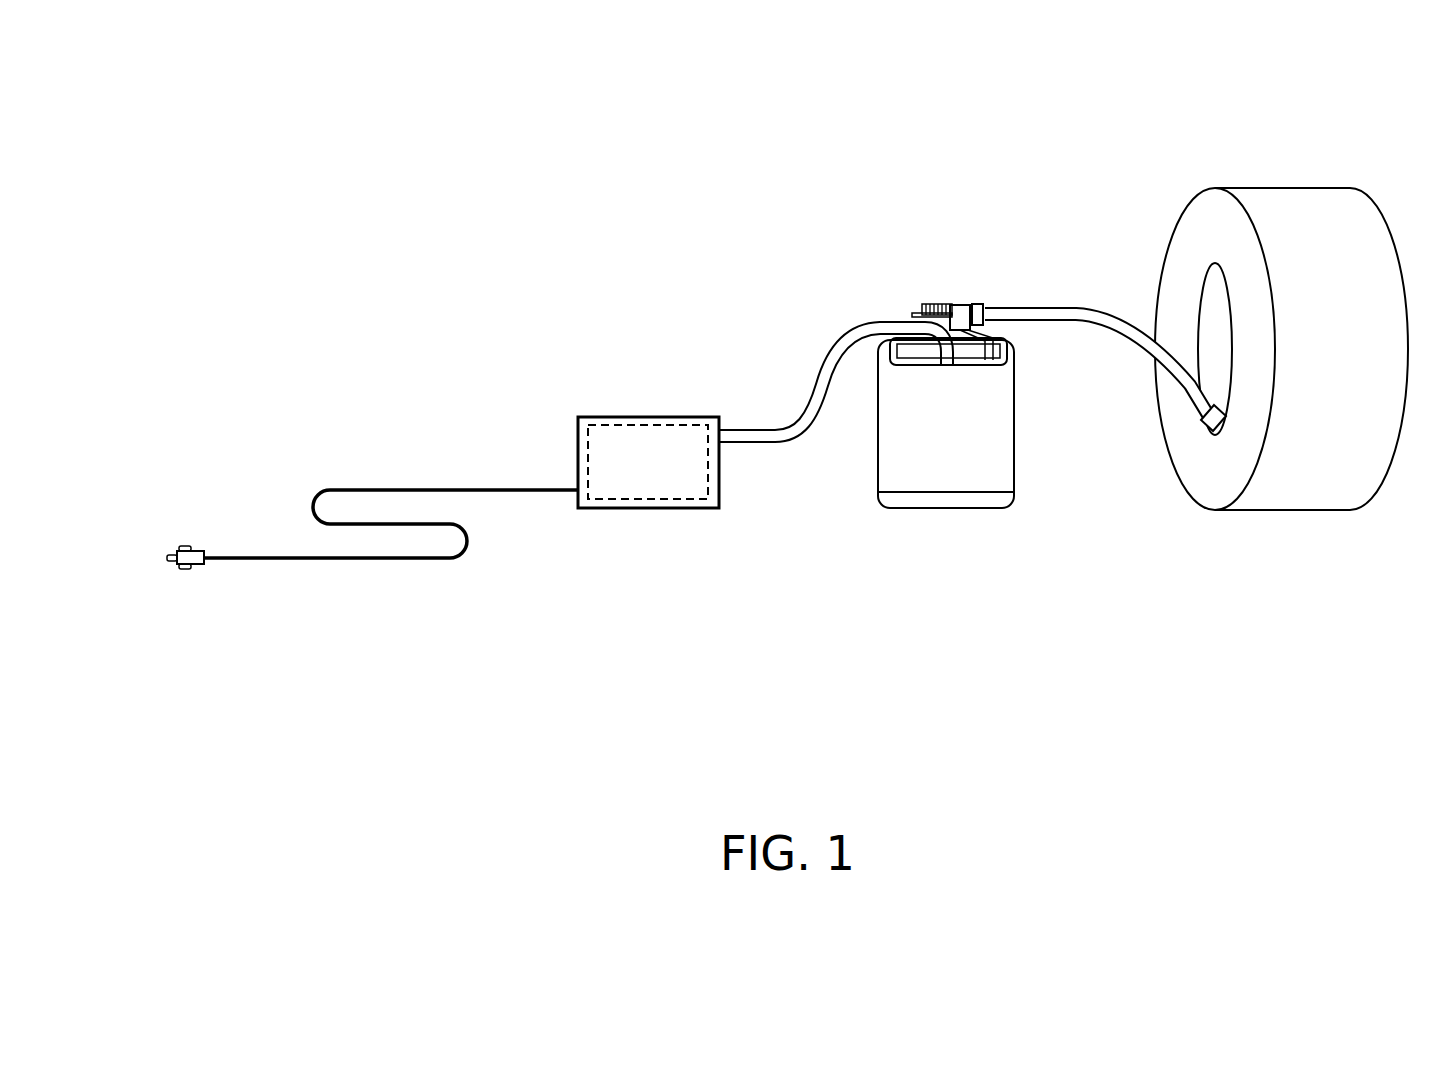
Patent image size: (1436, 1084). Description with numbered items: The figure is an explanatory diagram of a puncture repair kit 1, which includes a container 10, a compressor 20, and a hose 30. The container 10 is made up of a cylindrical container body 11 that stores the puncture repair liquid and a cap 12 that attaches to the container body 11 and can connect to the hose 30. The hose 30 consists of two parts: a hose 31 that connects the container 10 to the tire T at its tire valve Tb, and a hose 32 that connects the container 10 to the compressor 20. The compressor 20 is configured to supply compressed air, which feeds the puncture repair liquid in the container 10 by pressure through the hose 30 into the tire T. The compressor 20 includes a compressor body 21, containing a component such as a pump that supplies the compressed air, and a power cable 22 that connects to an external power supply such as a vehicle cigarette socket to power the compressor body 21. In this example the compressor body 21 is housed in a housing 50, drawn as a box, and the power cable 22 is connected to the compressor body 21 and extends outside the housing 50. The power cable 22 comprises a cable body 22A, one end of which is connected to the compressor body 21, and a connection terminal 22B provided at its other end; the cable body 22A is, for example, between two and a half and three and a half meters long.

The puncture repair kit 1 is at (702, 318).
The container 10 is at (985, 412).
The container body 11 is at (998, 470).
The cap 12 is at (963, 303).
The compressor 20 is at (375, 616).
The compressor body 21 is at (627, 482).
The power cable 22 is at (370, 586).
The cable body 22A is at (343, 561).
The connection terminal 22B is at (194, 589).
The hose 30 is at (964, 425).
The hose 31 is at (1095, 322).
The hose 32 is at (795, 430).
The housing 50 is at (633, 518).
The tire T is at (1290, 199).
The tire valve Tb is at (1206, 428).